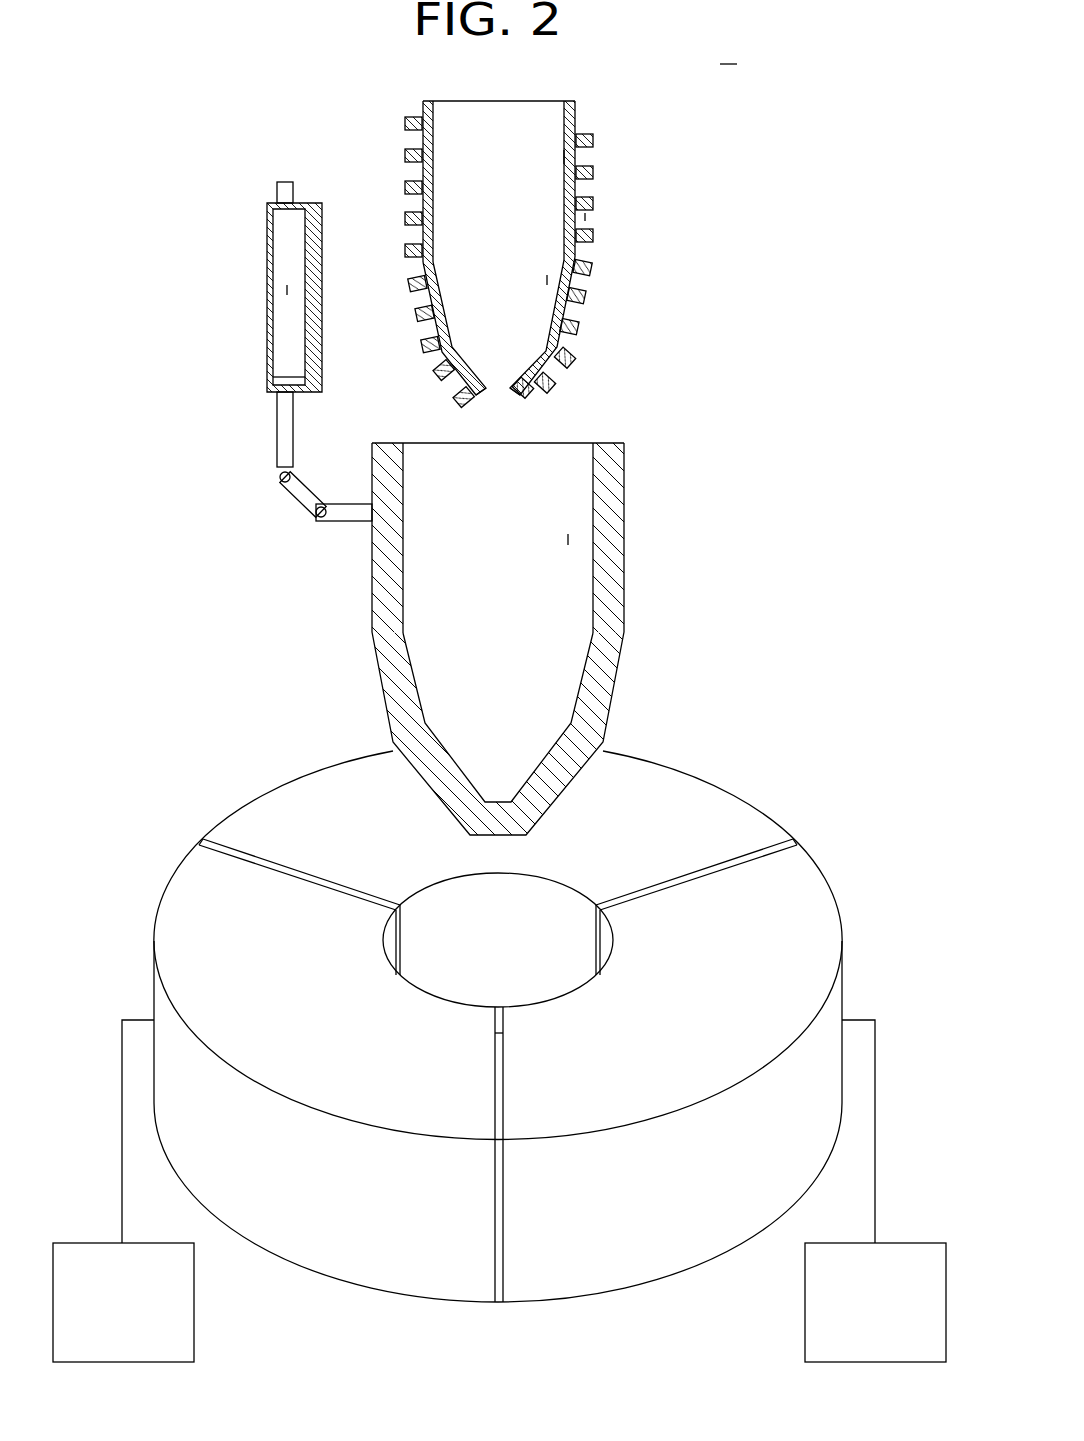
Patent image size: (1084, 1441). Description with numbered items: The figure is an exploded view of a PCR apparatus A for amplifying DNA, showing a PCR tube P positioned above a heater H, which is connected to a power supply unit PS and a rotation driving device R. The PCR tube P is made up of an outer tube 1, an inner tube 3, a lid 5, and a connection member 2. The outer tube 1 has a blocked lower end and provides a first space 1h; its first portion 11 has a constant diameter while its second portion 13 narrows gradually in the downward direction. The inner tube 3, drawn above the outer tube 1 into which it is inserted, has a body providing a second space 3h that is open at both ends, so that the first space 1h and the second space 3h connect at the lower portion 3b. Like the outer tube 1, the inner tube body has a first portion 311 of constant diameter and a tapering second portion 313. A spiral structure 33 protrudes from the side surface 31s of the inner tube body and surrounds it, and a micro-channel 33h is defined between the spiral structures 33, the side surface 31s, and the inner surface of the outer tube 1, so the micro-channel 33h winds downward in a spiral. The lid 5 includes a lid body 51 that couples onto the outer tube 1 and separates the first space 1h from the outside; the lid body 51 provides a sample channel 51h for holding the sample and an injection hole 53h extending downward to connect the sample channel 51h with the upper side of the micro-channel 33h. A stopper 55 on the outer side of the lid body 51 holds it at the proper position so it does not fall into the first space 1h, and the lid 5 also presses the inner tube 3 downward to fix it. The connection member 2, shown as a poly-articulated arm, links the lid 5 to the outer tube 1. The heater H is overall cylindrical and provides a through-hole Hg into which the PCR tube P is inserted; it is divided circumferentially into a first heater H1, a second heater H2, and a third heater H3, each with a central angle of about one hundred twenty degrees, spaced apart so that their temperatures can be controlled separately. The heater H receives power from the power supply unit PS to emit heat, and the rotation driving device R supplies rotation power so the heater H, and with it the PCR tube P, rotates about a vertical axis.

The PCR apparatus A is at (728, 52).
The inner tube 3 is at (558, 253).
The first portion 311 is at (570, 109).
The side surface 31s is at (577, 157).
The spiral structure 33 is at (592, 203).
The micro-channel 33h is at (585, 217).
The second space 3h is at (547, 280).
The second portion 313 is at (557, 347).
The lower portion 3b is at (570, 403).
The lid 5 is at (231, 287).
The stopper 55 is at (290, 190).
The lid body 51 is at (268, 325).
The sample channel 51h is at (287, 290).
The injection hole 53h is at (241, 377).
The connection member 2 is at (285, 433).
The outer tube 1 is at (552, 639).
The first portion 11 is at (608, 585).
The second portion 13 is at (605, 688).
The first space 1h is at (630, 540).
The PCR tube P is at (765, 392).
The heater H is at (501, 983).
The first heater H1 is at (180, 917).
The second heater H2 is at (822, 921).
The third heater H3 is at (697, 793).
The through-hole Hg is at (466, 912).
The power supply unit PS is at (84, 1243).
The rotation driving device R is at (914, 1243).